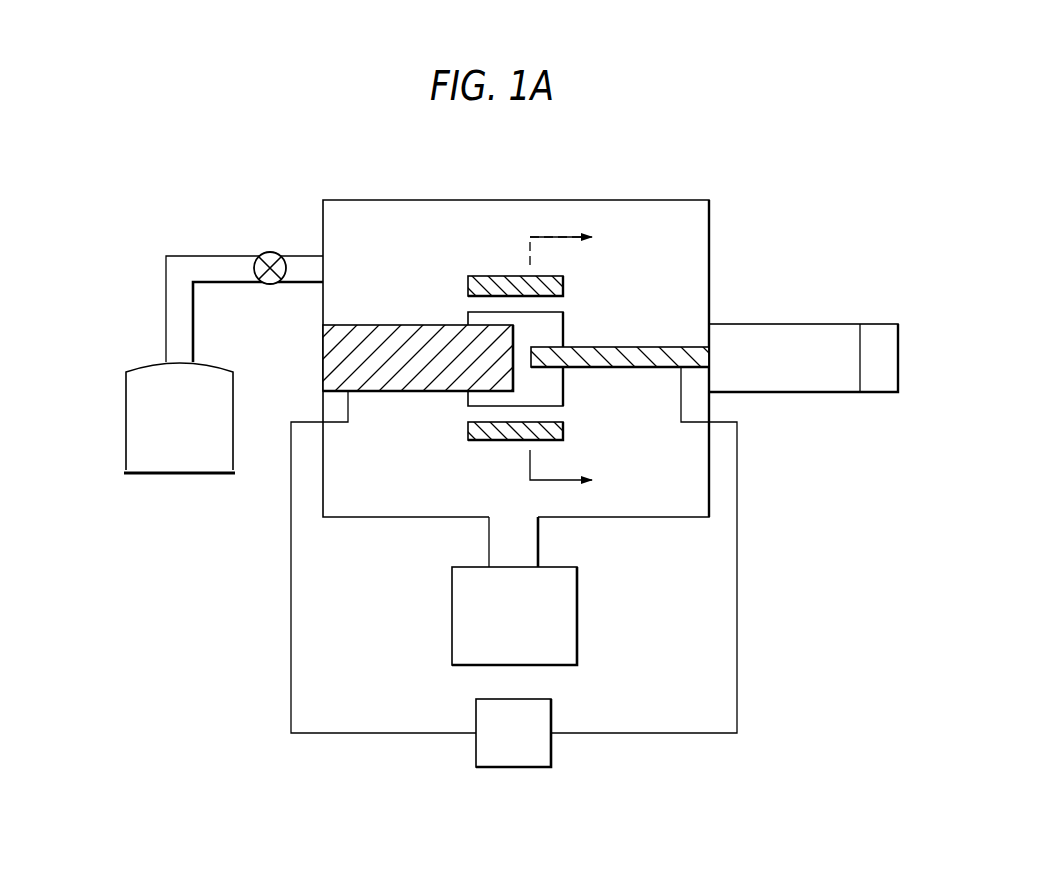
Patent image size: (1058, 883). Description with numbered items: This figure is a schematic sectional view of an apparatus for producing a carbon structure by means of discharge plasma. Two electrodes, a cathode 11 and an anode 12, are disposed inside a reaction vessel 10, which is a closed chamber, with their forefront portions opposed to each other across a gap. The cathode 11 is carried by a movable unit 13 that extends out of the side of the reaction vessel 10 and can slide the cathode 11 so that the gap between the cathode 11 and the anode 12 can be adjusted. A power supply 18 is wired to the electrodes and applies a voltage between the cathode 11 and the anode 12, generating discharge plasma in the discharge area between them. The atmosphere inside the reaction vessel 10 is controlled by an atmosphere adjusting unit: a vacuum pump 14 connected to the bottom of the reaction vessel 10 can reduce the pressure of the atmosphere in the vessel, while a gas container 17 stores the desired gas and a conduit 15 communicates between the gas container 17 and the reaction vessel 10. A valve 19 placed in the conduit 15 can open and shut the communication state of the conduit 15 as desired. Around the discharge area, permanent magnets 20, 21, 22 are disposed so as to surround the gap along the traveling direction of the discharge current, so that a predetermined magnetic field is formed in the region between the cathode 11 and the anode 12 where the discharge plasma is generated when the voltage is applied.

The reaction vessel 10 is at (515, 200).
The cathode 11 is at (660, 347).
The anode 12 is at (384, 325).
The movable unit 13 is at (800, 324).
The vacuum pump 14 is at (579, 614).
The conduit 15 is at (197, 256).
The gas container 17 is at (126, 423).
The power supply 18 is at (552, 748).
The valve 19 is at (276, 254).
The permanent magnet 20 is at (563, 284).
The permanent magnet 21 is at (563, 340).
The permanent magnet 22 is at (563, 429).